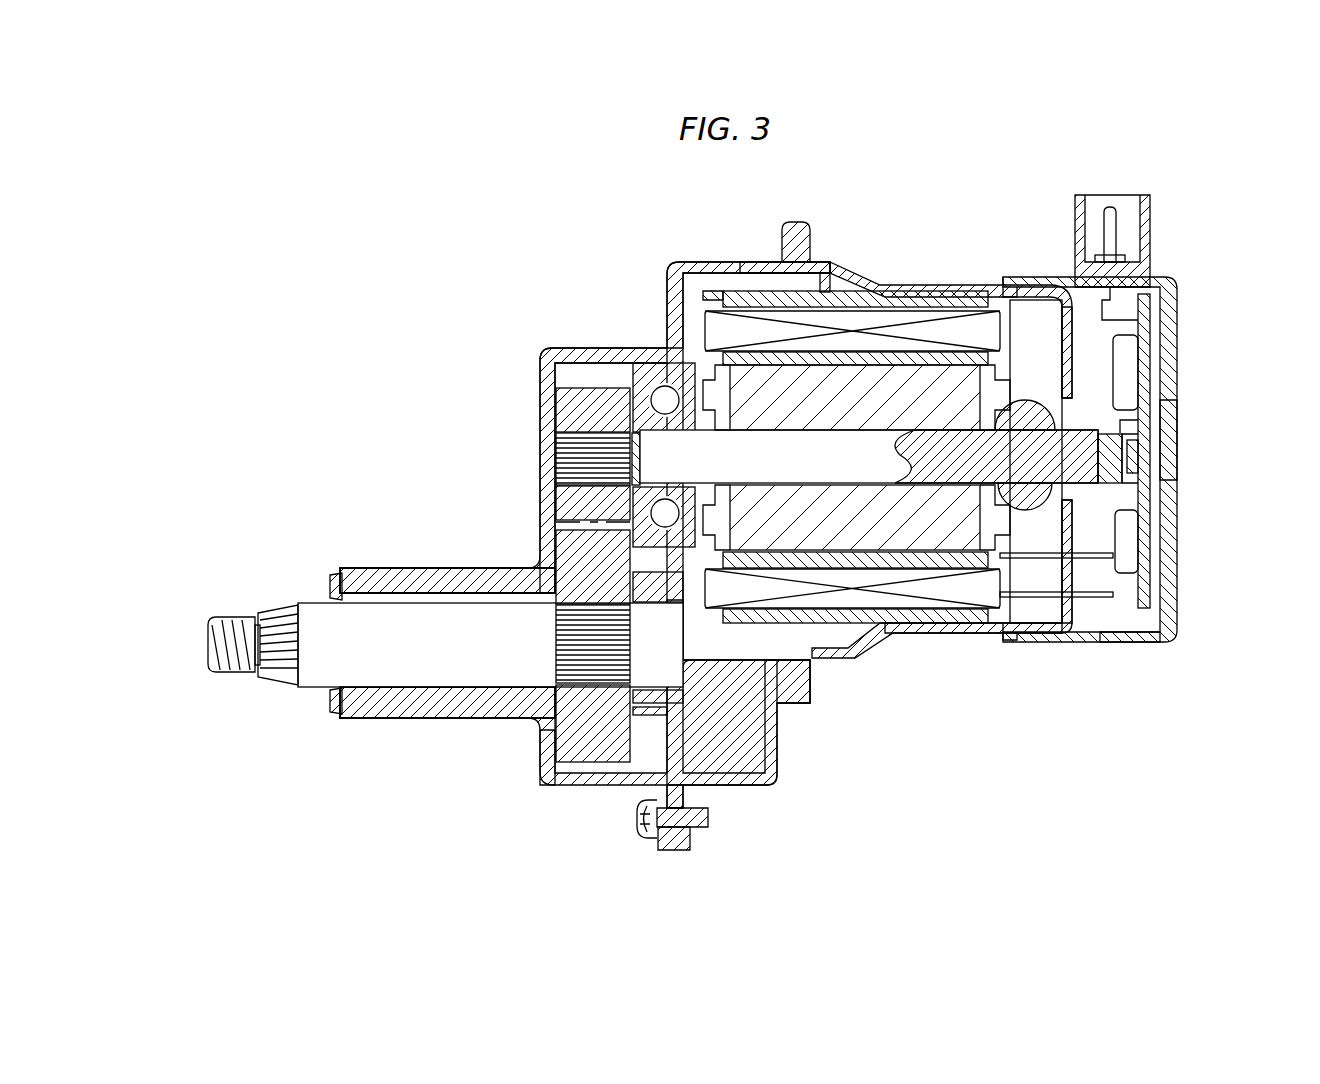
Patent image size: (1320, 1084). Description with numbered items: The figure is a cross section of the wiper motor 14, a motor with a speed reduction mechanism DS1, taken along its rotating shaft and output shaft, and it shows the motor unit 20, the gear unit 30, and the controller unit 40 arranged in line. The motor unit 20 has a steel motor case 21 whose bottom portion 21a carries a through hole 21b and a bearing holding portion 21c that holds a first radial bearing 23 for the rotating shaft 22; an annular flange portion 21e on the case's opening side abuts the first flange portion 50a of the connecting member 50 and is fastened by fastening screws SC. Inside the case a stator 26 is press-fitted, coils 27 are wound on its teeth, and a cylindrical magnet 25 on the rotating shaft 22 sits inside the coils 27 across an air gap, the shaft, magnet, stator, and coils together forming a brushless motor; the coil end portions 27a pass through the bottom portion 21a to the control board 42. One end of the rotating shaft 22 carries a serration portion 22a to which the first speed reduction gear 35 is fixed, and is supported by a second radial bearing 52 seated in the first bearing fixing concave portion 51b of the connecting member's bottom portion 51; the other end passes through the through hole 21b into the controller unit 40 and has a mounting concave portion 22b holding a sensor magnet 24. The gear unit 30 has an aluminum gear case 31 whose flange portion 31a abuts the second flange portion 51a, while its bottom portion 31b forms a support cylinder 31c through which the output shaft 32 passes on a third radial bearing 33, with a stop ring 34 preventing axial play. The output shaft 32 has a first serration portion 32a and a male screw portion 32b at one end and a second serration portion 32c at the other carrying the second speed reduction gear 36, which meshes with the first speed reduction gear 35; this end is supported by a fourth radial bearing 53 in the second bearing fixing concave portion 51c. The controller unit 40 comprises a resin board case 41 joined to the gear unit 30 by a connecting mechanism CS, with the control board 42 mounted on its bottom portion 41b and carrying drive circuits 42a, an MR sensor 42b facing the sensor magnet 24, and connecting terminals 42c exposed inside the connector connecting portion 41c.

The wiper motor 14 is at (435, 342).
The motor unit 20 is at (918, 642).
The motor case 21 is at (932, 296).
The bottom portion of motor case 21a is at (1064, 350).
The through hole 21b is at (1040, 580).
The bearing holding portion 21c is at (1033, 637).
The flange portion of motor case 21e is at (804, 243).
The rotating shaft 22 is at (900, 470).
The serration portion 22a is at (585, 458).
The mounting concave portion 22b is at (1120, 433).
The first radial bearing 23 is at (1025, 405).
The sensor magnet 24 is at (1105, 493).
The magnet 25 is at (940, 398).
The stator 26 is at (745, 300).
The coils 27 is at (862, 330).
The coil end portions 27a is at (1040, 530).
The gear unit 30 is at (440, 575).
The gear case 31 is at (563, 348).
The flange portion of gear case 31a is at (658, 838).
The bottom portion of gear case 31b is at (548, 738).
The support cylinder 31c is at (410, 712).
The output shaft 32 is at (490, 655).
The first serration portion 32a is at (282, 640).
The male screw portion 32b is at (226, 640).
The second serration portion 32c is at (590, 650).
The third radial bearing 33 is at (400, 590).
The stop ring 34 is at (338, 692).
The first speed reduction gear 35 is at (590, 405).
The second speed reduction gear 36 is at (592, 760).
The controller unit 40 is at (1140, 660).
The board case 41 is at (1132, 648).
The bottom portion of board case 41b is at (1168, 445).
The connector connecting portion 41c is at (1148, 245).
The control board 42 is at (1150, 497).
The drive circuits 42a is at (1125, 362).
The MR sensor 42b is at (1137, 475).
The connecting terminals 42c is at (1113, 228).
The connecting member 50 is at (663, 291).
The first flange portion 50a is at (795, 262).
The bottom portion of connecting member 51 is at (608, 350).
The second flange portion 51a is at (692, 838).
The first bearing fixing concave portion 51b is at (560, 348).
The second bearing fixing concave portion 51c is at (700, 660).
The second radial bearing 52 is at (662, 385).
The fourth radial bearing 53 is at (652, 705).
The connecting mechanism CS is at (1010, 276).
The speed reduction mechanism DS1 is at (552, 520).
The fastening screws SC is at (648, 816).